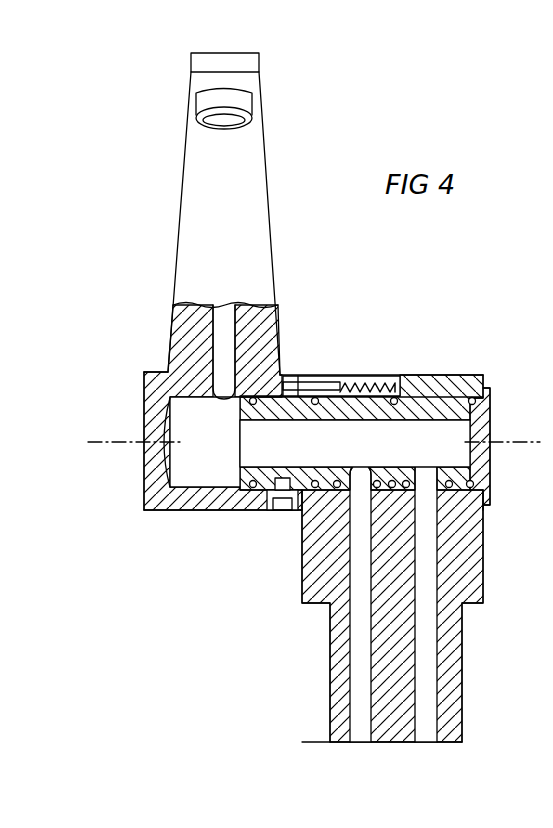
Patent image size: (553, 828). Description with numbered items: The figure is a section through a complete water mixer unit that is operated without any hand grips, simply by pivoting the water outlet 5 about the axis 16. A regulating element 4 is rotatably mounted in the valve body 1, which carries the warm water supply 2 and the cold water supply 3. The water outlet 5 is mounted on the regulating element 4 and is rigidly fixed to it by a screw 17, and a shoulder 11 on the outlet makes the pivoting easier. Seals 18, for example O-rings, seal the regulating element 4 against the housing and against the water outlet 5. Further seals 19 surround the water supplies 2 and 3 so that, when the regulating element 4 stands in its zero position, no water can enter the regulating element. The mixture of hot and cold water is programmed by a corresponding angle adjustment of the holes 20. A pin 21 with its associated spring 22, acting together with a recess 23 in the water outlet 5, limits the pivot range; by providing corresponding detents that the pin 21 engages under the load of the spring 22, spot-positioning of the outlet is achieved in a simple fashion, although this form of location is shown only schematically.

The valve body 1 is at (482, 521).
The warm water supply 2 is at (361, 732).
The cold water supply 3 is at (428, 732).
The regulating element 4 is at (487, 408).
The water outlet 5 is at (258, 212).
The shoulder 11 is at (253, 63).
The axis 16 is at (532, 448).
The screw 17 is at (280, 512).
The seals 18 is at (345, 396).
The seals 19 is at (302, 500).
The holes 20 is at (358, 472).
The pin 21 is at (322, 425).
The spring 22 is at (370, 385).
The recess 23 is at (290, 393).